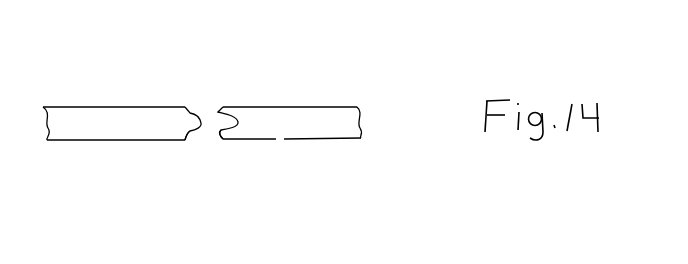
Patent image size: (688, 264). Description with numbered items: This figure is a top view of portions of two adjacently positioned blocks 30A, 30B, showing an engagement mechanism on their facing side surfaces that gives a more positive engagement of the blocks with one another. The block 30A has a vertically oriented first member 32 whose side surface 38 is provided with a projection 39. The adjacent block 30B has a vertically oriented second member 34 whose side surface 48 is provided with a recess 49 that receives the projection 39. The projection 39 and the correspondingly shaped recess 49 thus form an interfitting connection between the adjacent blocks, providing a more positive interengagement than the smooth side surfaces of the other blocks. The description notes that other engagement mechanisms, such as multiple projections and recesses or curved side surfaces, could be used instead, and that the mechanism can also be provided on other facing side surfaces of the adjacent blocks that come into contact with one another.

The block 30A is at (144, 119).
The adjacent block 30B is at (329, 109).
The first panel body 32 is at (95, 106).
The second member 34 is at (280, 104).
The side surface 38 is at (187, 108).
The projection 39 is at (195, 133).
The side surface 48 is at (219, 139).
The recess 49 is at (223, 108).